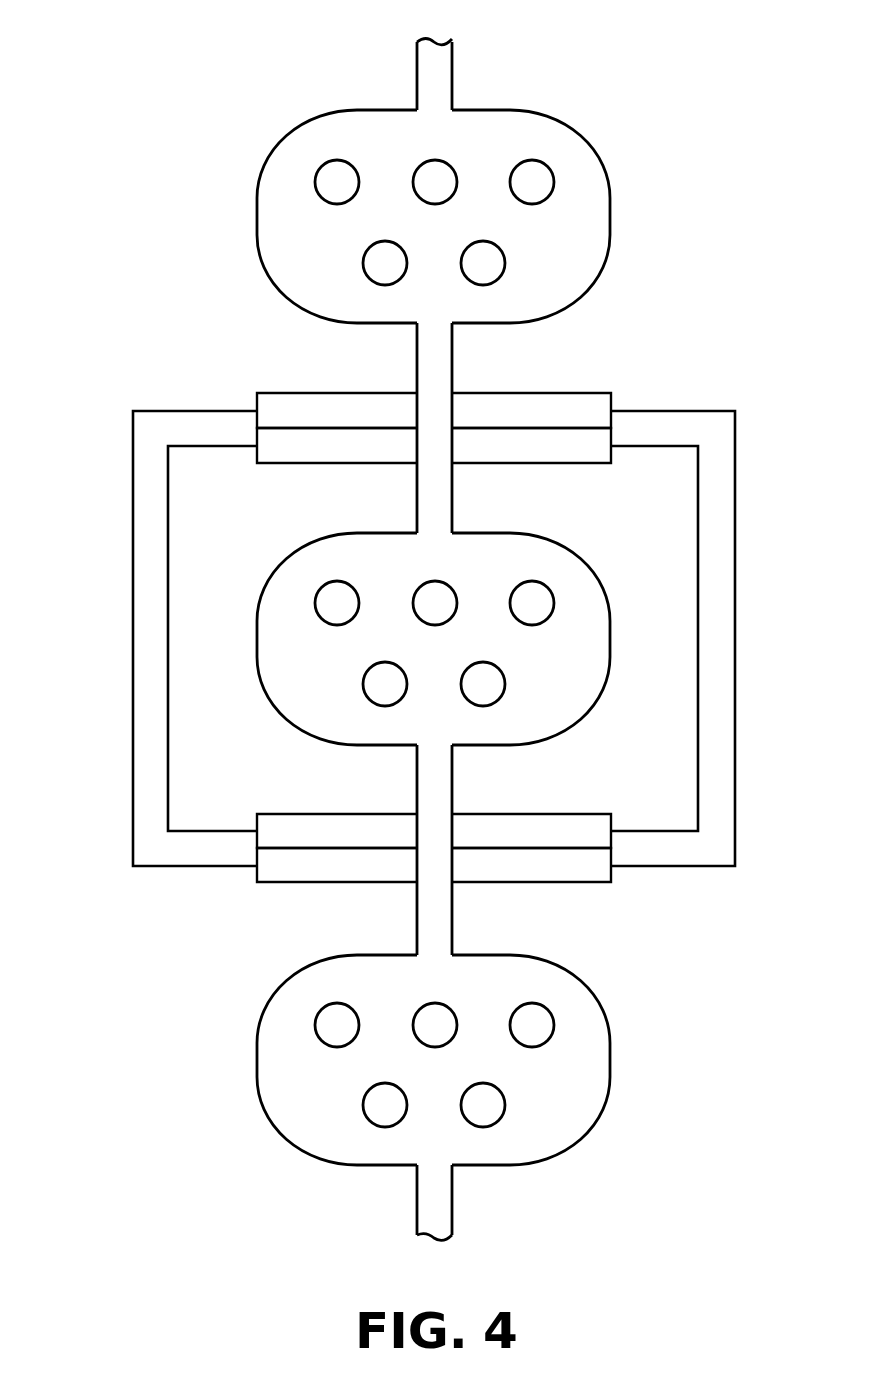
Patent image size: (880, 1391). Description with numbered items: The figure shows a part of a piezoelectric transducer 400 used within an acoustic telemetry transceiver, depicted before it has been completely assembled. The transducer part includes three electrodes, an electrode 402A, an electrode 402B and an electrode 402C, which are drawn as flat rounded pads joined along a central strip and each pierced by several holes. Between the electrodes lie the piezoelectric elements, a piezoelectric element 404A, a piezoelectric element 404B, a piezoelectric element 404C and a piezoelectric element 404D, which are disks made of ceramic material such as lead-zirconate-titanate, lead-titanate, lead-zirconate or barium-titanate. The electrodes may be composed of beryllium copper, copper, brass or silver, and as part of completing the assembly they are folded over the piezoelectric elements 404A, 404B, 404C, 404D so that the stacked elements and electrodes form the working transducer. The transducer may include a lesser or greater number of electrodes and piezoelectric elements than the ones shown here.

The flexible circuit assembly 400 is at (143, 100).
The electrode 402A is at (575, 130).
The electrode 402B is at (573, 552).
The electrode 402C is at (572, 978).
The piezoelectric element 404A is at (542, 393).
The piezoelectric element 404B is at (320, 469).
The piezoelectric element 404C is at (542, 814).
The piezoelectric element 404D is at (320, 889).